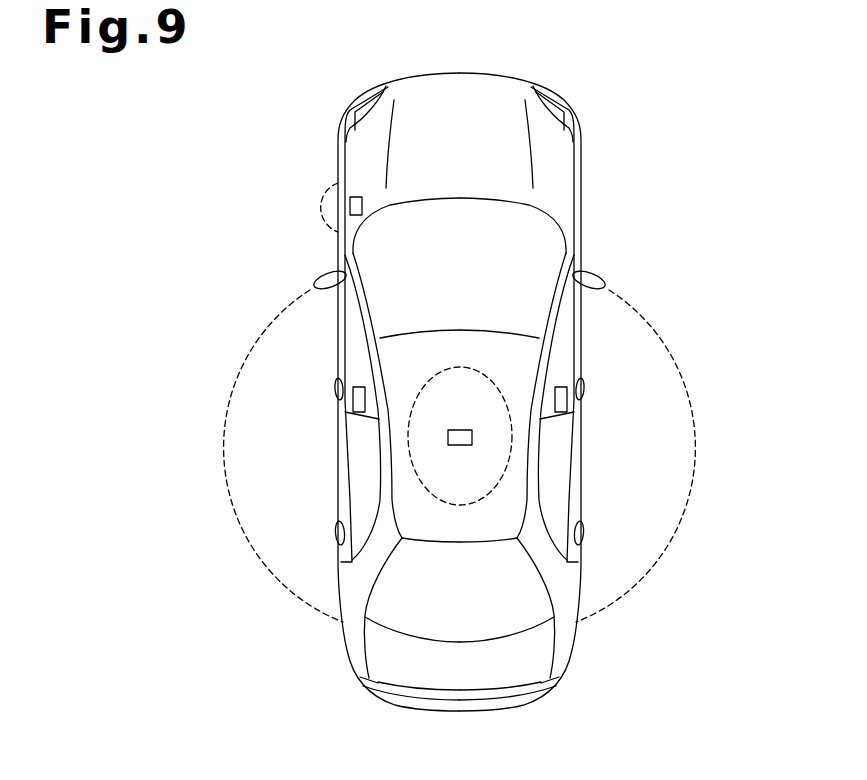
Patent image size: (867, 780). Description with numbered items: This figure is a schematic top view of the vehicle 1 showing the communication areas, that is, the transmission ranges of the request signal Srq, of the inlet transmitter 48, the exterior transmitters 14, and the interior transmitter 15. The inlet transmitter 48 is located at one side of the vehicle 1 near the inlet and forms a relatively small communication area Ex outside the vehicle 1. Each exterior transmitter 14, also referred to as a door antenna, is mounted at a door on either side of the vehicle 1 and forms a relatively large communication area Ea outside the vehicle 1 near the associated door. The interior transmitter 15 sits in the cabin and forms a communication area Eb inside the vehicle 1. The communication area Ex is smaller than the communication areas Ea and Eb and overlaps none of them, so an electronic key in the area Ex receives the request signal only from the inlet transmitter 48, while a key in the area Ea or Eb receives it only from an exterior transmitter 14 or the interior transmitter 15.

The vehicle 1 is at (583, 185).
The exterior transmitter 14 is at (358, 386).
The interior transmitter 15 is at (460, 430).
The inlet transmitter 48 is at (357, 196).
The communication area Ea is at (228, 386).
The communication area Eb is at (470, 367).
The communication area Ex is at (317, 206).